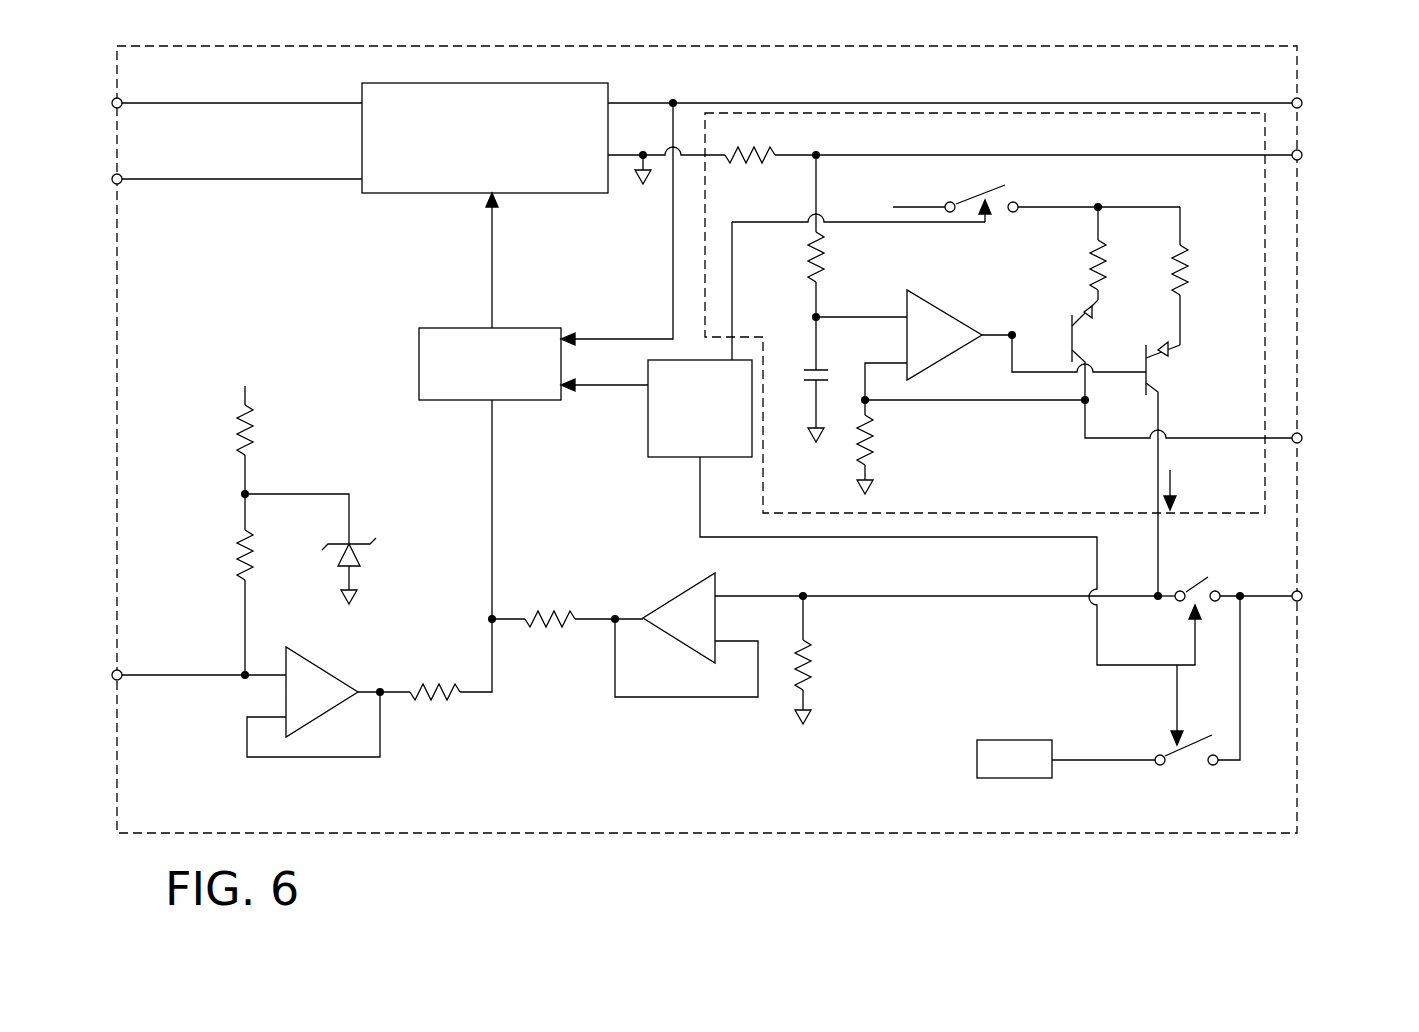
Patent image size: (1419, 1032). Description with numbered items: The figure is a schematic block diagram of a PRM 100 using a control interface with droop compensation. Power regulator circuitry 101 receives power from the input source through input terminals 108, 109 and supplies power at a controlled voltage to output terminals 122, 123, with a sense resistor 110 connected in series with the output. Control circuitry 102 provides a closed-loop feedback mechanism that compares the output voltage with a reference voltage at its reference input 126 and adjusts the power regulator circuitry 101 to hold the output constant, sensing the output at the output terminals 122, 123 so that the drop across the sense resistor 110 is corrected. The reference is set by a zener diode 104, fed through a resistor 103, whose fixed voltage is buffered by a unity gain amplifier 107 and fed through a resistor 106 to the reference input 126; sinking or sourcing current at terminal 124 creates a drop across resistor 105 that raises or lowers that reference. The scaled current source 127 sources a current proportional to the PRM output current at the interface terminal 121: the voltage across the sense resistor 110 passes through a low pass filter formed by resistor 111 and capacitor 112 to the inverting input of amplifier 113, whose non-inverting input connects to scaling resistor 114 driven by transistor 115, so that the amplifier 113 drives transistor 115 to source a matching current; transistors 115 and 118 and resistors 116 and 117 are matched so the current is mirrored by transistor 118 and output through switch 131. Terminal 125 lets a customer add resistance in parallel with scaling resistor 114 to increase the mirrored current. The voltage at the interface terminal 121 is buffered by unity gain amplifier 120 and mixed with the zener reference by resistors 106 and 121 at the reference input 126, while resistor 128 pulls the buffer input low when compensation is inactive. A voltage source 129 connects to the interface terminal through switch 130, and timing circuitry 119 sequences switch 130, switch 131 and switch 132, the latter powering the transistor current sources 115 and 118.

The PRM 100 is at (988, 833).
The power regulator circuitry 101 is at (485, 138).
The control circuitry 102 is at (546, 251).
The resistor 103 is at (270, 428).
The zener diode 104 is at (330, 549).
The resistor 105 is at (219, 582).
The resistor 106 is at (449, 659).
The unity gain amplifier 107 is at (328, 699).
The input terminal 108 is at (214, 109).
The input terminal 109 is at (214, 192).
The sense resistor 110 is at (771, 156).
The resistor 111 is at (858, 236).
The capacitor 112 is at (798, 377).
The amplifier 113 is at (981, 337).
The scaling resistor 114 is at (971, 445).
The transistor 115 is at (1103, 352).
The resistor 116 is at (1074, 251).
The resistor 117 is at (1207, 276).
The transistor 118 is at (1182, 469).
The timing circuitry 119 is at (881, 483).
The unity gain amplifier 120 is at (884, 628).
The interface terminal / resistor 121 is at (920, 606).
The output terminal 122 is at (990, 107).
The output terminal 123 is at (980, 168).
The terminal 124 is at (176, 660).
The terminal 125 is at (1219, 421).
The reference input 126 is at (525, 509).
The scaled current source 127 is at (1052, 113).
The resistor 128 is at (834, 658).
The voltage source 129 is at (1023, 738).
The switch 130 is at (1146, 700).
The switch 131 is at (1195, 575).
The switch 132 is at (1027, 193).